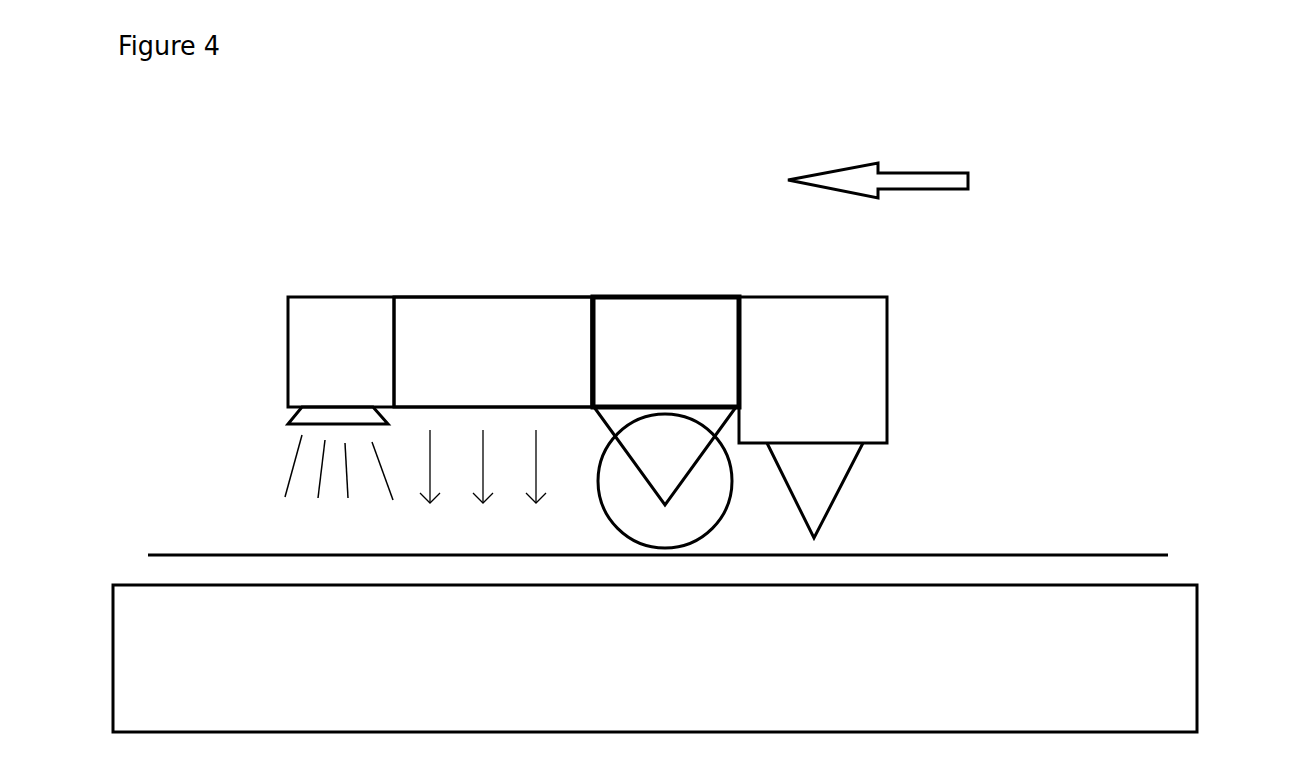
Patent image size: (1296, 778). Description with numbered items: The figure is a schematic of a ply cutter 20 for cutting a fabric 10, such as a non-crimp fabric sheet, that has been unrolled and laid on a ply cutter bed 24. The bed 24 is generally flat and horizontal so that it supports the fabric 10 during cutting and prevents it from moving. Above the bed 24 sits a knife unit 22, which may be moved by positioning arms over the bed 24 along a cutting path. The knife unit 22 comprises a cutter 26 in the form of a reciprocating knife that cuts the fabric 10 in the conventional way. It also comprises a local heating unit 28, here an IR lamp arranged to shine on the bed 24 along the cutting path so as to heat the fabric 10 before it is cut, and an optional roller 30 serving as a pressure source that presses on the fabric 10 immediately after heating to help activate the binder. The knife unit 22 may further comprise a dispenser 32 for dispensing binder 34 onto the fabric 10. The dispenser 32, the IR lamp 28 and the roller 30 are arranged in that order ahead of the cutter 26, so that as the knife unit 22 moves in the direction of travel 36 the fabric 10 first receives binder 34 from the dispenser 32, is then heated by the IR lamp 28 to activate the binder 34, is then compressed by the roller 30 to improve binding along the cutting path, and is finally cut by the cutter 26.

The fabric 10 is at (1030, 555).
The ply cutter 20 is at (1185, 197).
The knife unit 22 is at (226, 326).
The ply cutter bed 24 is at (1160, 632).
The cutter 26 is at (833, 462).
The local heating unit 28 is at (490, 335).
The roller 30 is at (665, 470).
The dispenser 32 is at (315, 335).
The binder 34 is at (288, 462).
The direction of travel 36 is at (901, 180).